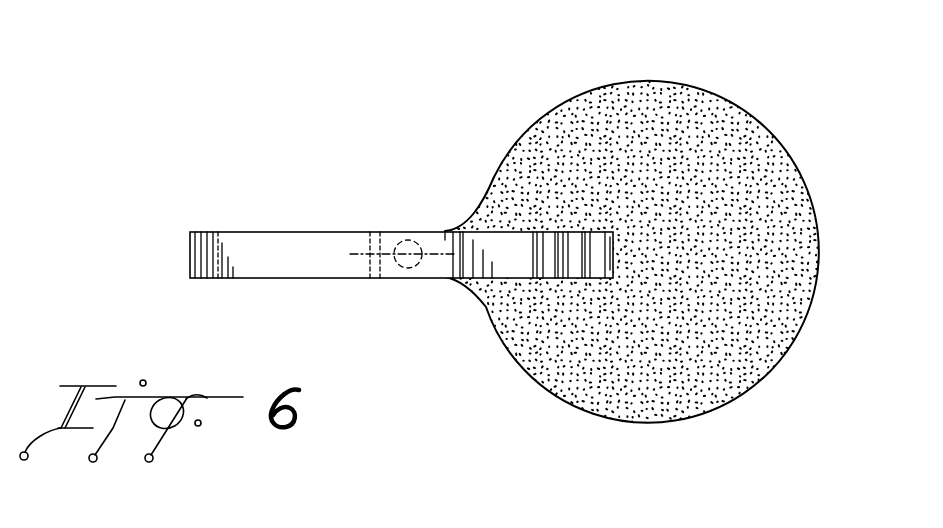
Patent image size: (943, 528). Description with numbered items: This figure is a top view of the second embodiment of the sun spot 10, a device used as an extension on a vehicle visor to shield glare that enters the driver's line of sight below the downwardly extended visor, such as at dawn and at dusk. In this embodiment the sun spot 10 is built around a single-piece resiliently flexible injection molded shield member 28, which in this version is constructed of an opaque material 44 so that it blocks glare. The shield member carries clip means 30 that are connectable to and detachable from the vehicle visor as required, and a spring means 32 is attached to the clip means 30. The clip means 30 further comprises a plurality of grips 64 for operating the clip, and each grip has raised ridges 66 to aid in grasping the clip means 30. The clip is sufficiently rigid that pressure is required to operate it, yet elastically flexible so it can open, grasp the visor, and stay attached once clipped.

The sun spot 10 is at (438, 70).
The single-piece resiliently flexible injection molded shield member 28 is at (588, 88).
The clip means 30 is at (305, 229).
The spring means 32 is at (405, 240).
The opaque material 44 is at (653, 112).
The grips 64 is at (503, 240).
The raised ridges 66 is at (563, 237).